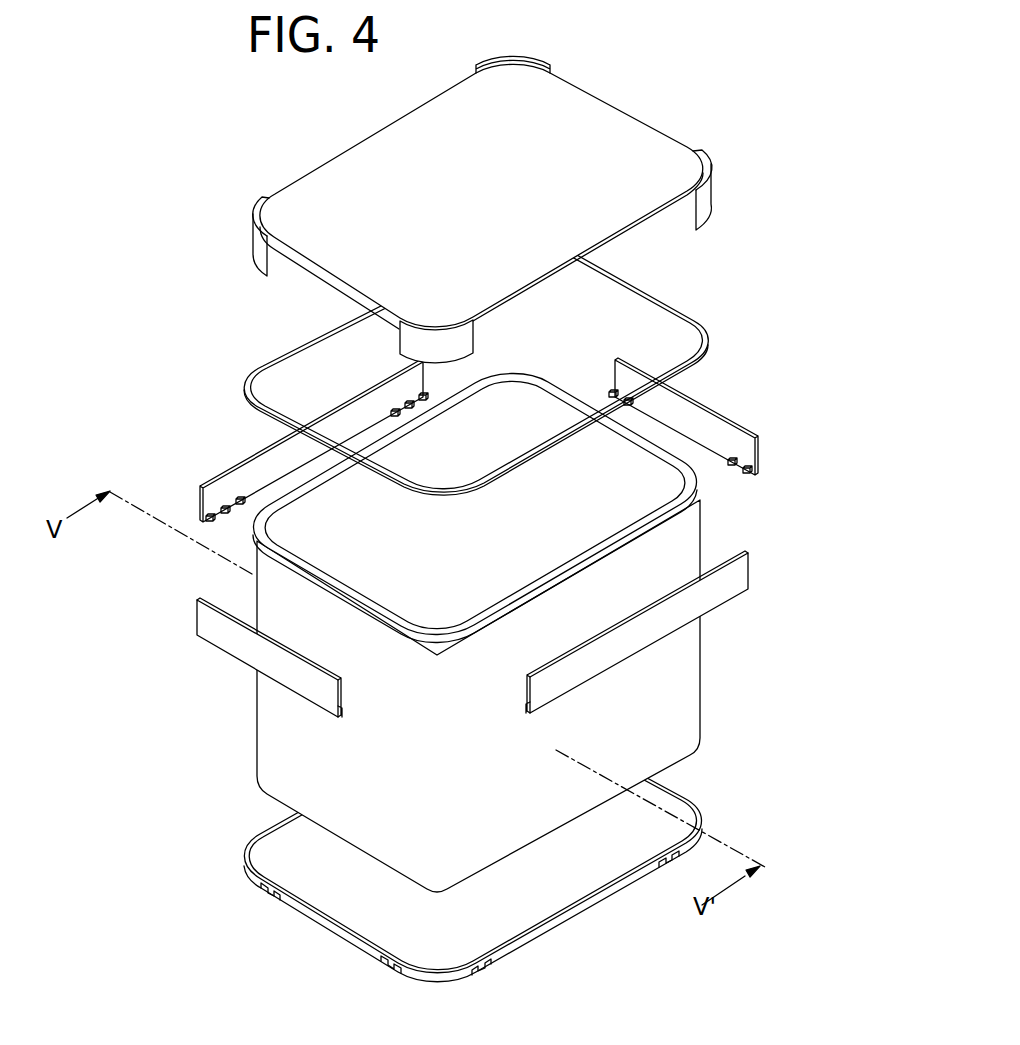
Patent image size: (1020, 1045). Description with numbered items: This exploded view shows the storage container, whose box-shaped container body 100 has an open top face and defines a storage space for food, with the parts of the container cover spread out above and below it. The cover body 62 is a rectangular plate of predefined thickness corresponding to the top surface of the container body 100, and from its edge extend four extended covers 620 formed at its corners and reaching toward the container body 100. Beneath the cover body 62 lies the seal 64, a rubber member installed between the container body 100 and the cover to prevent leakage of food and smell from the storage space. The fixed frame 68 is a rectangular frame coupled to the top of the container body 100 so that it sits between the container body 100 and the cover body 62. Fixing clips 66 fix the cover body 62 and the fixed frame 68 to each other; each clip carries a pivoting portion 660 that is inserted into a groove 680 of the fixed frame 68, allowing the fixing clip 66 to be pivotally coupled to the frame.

The cover body 62 is at (600, 130).
The extended cover 620 is at (707, 195).
The seal 64 is at (687, 320).
The fixing clip 66 is at (743, 573).
The pivoting portion 660 is at (229, 516).
The fixed frame 68 is at (578, 910).
The groove 680 is at (488, 963).
The container body 100 is at (687, 688).